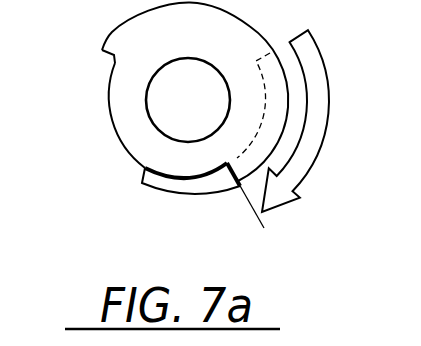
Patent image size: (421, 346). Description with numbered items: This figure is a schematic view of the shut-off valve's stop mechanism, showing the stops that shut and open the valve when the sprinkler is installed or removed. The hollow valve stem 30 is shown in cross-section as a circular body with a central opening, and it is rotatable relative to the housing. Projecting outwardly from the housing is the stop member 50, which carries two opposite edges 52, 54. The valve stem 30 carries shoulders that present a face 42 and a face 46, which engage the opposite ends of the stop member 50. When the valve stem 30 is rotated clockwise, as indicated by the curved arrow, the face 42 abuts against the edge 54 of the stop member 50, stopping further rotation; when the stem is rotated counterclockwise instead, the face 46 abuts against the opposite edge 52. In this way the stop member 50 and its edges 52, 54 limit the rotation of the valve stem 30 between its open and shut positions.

The valve stem 30 is at (112, 127).
The face 42 is at (240, 165).
The face 46 is at (109, 56).
The stop member 50 is at (192, 189).
The edge 52 is at (144, 169).
The edge 54 is at (247, 197).